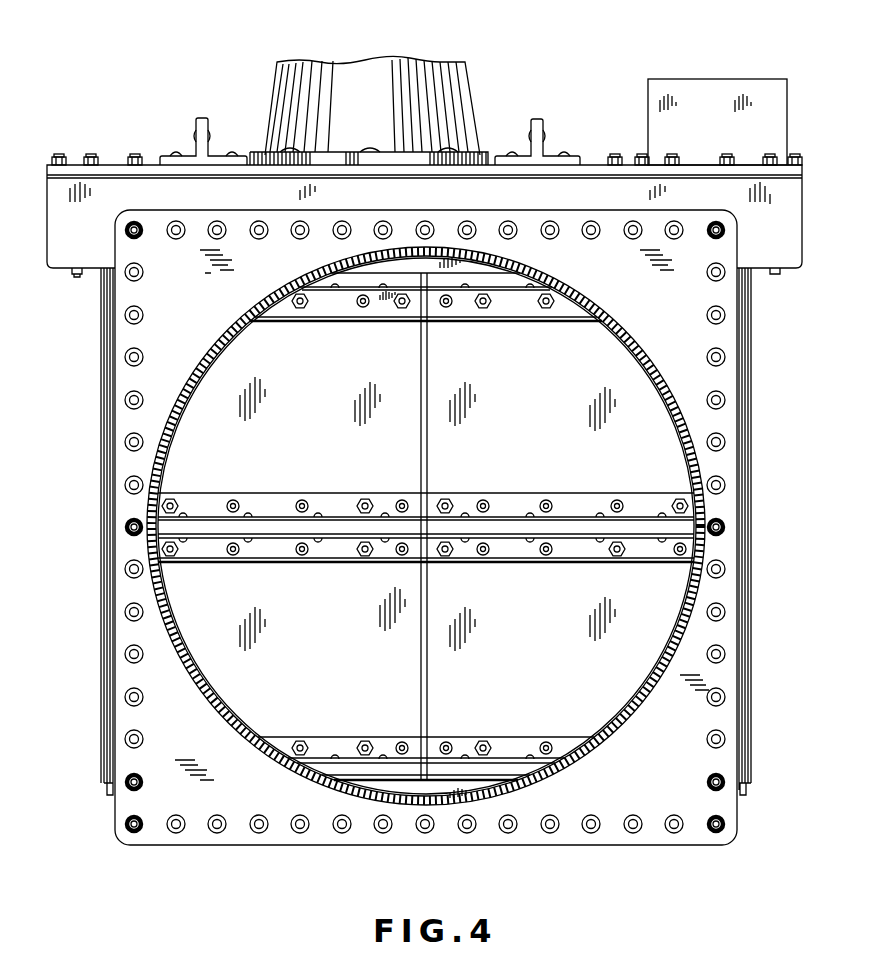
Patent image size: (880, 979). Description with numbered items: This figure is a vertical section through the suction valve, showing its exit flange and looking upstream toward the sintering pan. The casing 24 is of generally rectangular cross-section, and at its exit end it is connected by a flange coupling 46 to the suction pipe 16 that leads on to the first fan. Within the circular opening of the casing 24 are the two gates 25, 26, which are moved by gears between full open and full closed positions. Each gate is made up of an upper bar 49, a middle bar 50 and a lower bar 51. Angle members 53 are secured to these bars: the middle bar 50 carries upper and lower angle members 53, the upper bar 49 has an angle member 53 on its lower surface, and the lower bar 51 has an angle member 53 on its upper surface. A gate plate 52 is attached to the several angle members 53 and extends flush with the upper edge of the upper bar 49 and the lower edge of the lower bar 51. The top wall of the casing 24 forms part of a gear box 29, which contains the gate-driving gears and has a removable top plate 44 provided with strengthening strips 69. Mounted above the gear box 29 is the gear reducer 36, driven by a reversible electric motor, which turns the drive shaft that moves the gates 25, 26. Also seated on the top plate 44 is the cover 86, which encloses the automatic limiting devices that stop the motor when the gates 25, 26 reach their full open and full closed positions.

The suction pipe 16 is at (215, 713).
The casing 24 is at (93, 556).
The gate 25 is at (518, 528).
The gate 26 is at (322, 471).
The gear box 29 is at (71, 248).
The gear reducer 36 is at (443, 102).
The top plate 44 is at (110, 172).
The flange coupling 46 is at (746, 374).
The upper bar 49 is at (338, 278).
The middle bar 50 is at (281, 528).
The lower bar 51 is at (370, 770).
The gate plate 52 is at (216, 383).
The angle members 53 is at (385, 311).
The strengthening strips 69 is at (208, 126).
The cover 86 is at (709, 105).